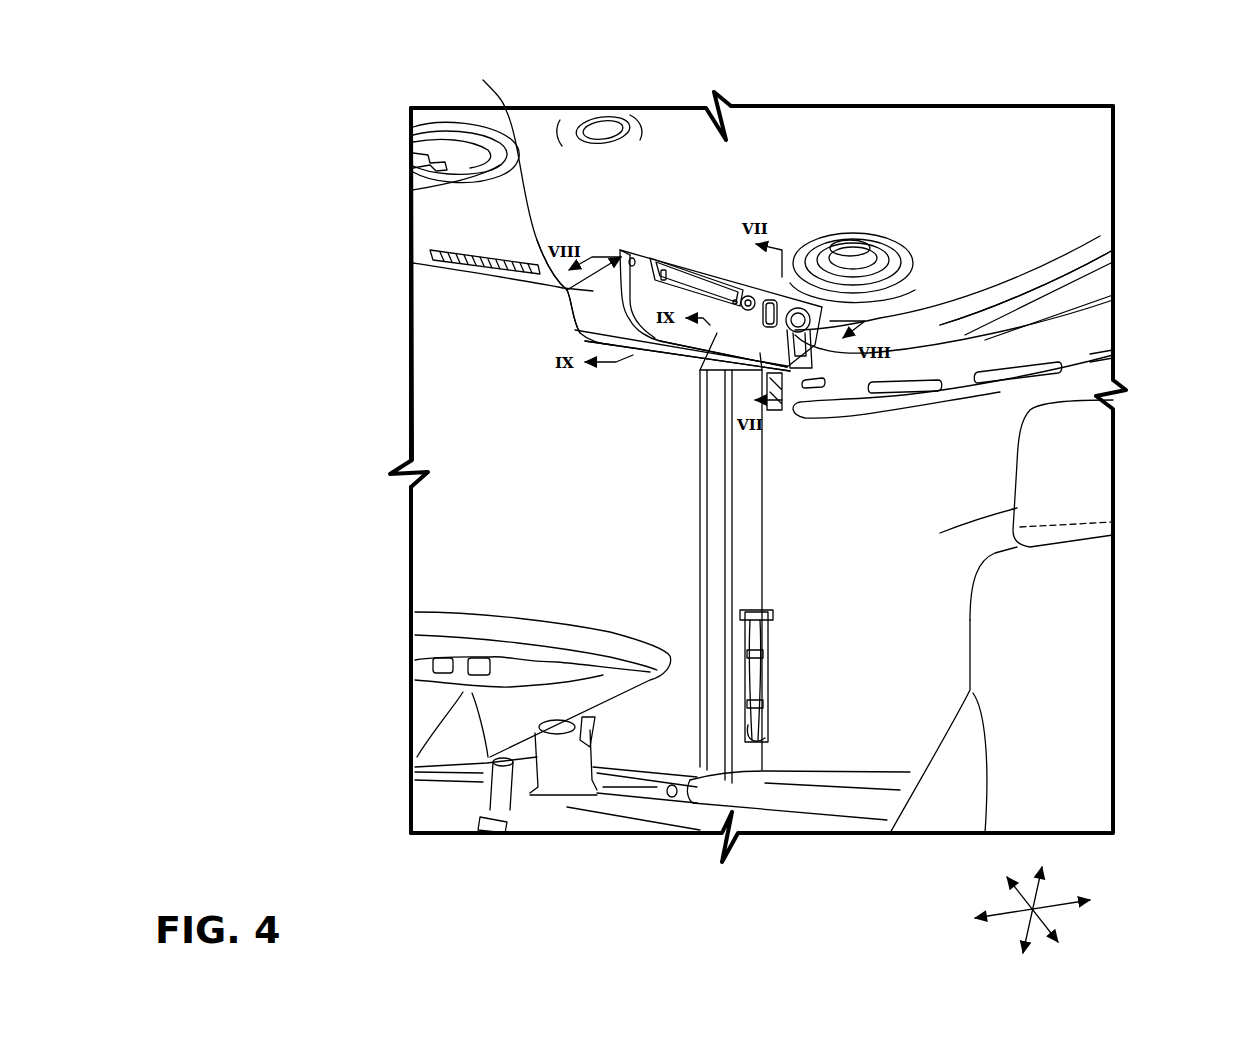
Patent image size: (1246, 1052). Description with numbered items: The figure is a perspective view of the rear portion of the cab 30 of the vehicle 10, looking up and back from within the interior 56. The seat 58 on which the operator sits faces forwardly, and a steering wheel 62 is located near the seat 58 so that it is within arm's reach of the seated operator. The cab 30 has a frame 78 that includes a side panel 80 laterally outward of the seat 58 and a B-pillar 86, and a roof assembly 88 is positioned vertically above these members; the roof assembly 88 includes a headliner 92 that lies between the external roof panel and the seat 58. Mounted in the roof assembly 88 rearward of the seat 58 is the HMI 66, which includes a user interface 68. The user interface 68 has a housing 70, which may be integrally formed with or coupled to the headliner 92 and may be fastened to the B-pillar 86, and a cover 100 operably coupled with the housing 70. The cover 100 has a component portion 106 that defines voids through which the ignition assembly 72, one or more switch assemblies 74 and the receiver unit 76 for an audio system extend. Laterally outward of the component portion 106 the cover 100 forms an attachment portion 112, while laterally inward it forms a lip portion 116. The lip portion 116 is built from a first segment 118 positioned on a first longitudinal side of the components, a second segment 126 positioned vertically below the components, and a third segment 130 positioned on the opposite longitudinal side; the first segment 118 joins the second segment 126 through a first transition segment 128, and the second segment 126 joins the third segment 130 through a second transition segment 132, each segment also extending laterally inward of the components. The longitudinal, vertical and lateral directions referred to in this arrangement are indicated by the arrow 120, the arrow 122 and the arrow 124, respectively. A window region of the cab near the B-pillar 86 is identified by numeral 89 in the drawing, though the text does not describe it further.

The vehicle 10 is at (1158, 96).
The cab 30 is at (932, 170).
The interior 56 is at (460, 430).
The seat 58 is at (1083, 607).
The steering wheel 62 is at (445, 613).
The HMI 66 is at (552, 322).
The user interface 68 is at (562, 301).
The housing 70 is at (539, 200).
The ignition assembly 72 is at (1005, 352).
The switch assembly 74 is at (762, 298).
The receiver unit 76 is at (694, 267).
The frame 78 is at (765, 540).
The side panel 80 is at (462, 488).
The B-pillar 86 is at (1017, 508).
The roof assembly 88 is at (1052, 103).
The window 89 is at (987, 444).
The headliner 92 is at (1080, 186).
The cover 100 is at (800, 304).
The component portion 106 is at (722, 309).
The attachment portion 112 is at (621, 311).
The lip portion 116 is at (745, 363).
The first segment 118 is at (629, 250).
The arrow 120 is at (1057, 903).
The arrow 122 is at (1040, 878).
The arrow 124 is at (1053, 922).
The second segment 126 is at (733, 341).
The first transition segment 128 is at (647, 346).
The third segment 130 is at (1113, 262).
The second transition segment 132 is at (1113, 295).